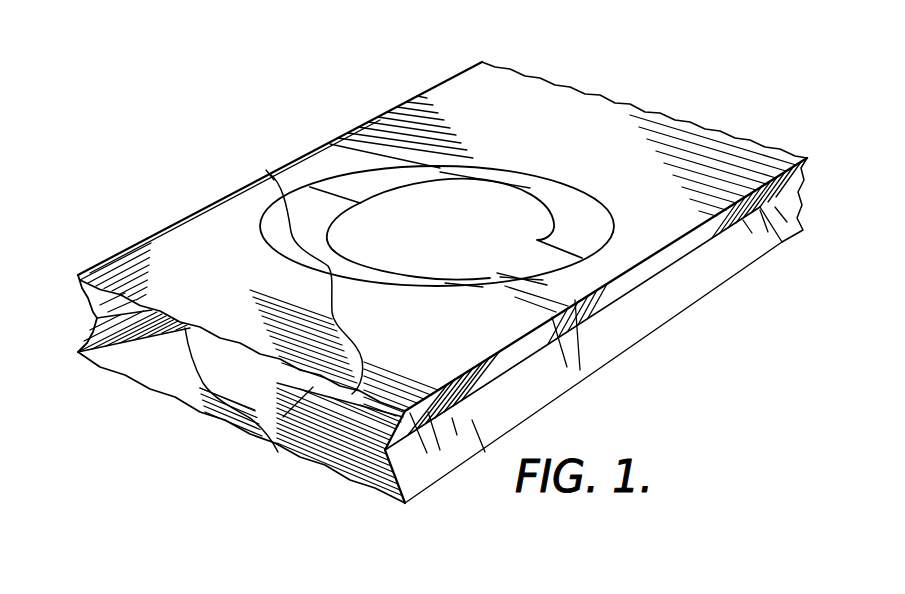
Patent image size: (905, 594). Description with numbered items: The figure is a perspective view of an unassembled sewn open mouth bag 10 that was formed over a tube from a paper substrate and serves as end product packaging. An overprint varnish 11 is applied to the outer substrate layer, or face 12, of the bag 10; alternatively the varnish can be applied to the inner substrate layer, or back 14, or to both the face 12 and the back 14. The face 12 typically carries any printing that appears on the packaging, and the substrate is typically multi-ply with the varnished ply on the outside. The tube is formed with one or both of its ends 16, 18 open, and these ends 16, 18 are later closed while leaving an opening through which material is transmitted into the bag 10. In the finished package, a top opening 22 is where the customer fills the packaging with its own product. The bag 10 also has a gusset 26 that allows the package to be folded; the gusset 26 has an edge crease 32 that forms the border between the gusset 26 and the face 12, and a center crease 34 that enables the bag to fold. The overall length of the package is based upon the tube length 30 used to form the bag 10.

The bag 10 is at (200, 104).
The overprint varnish 11 is at (495, 85).
The face 12 is at (230, 288).
The back 14 is at (172, 381).
The end 16 is at (363, 480).
The end 18 is at (582, 89).
The top opening 22 is at (238, 382).
The gusset 26 is at (660, 321).
The tube length 30 is at (467, 57).
The edge crease 32 is at (742, 197).
The center crease 34 is at (765, 208).